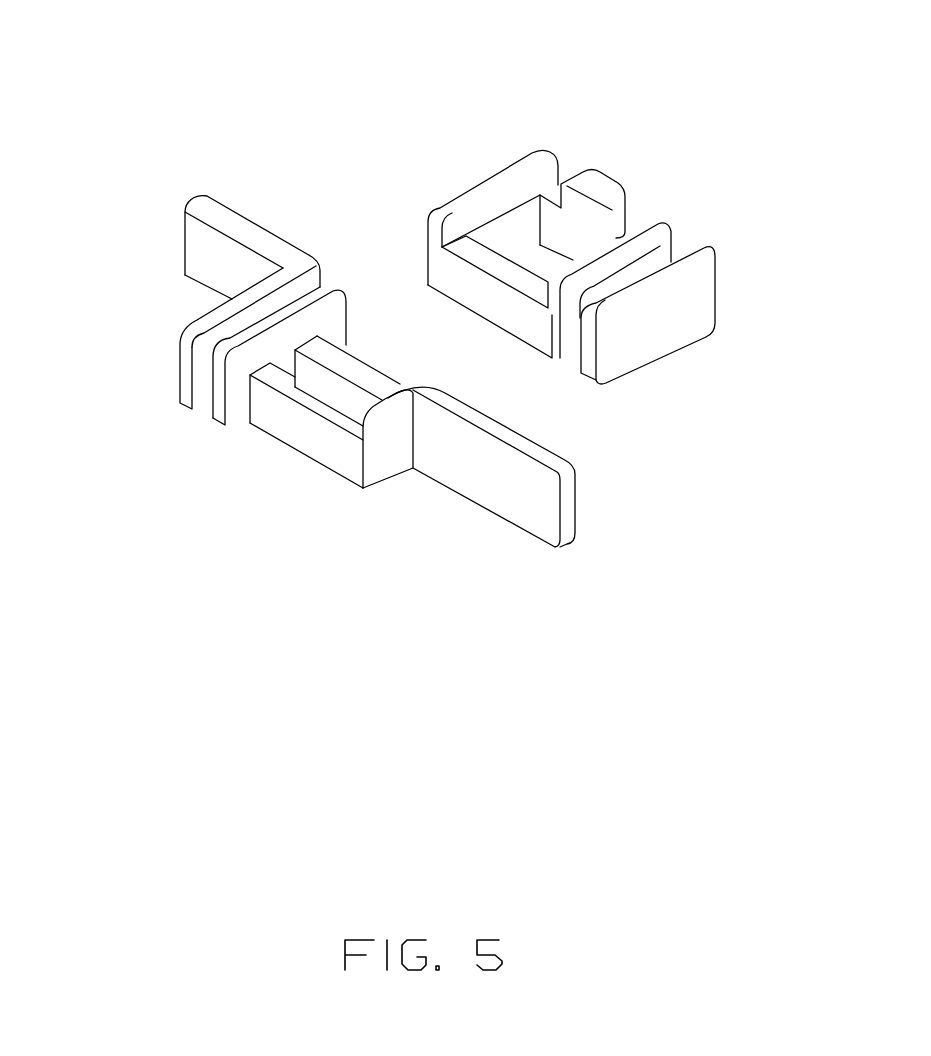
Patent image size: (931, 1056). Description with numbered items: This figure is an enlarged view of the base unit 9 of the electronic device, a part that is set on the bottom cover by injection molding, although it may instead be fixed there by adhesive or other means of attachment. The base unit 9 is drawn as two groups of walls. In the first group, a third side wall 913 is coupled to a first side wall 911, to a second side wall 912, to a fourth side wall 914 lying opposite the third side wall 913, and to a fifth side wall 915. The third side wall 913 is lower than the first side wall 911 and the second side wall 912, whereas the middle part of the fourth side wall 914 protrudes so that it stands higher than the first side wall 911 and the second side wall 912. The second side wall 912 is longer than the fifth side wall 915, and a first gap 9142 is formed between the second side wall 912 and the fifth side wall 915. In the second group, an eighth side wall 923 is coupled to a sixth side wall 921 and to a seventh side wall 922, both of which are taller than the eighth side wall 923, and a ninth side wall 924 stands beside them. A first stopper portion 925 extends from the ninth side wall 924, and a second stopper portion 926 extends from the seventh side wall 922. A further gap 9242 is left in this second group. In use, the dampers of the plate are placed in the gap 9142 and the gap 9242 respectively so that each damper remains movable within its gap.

The base unit 9 is at (296, 38).
The first side wall 911 is at (474, 254).
The second side wall 912 is at (656, 268).
The third side wall 913 is at (462, 283).
The fourth side wall 914 is at (622, 205).
The first gap 9142 is at (733, 233).
The fifth side wall 915 is at (683, 315).
The sixth side wall 921 is at (248, 382).
The seventh side wall 922 is at (328, 461).
The eighth side wall 923 is at (406, 381).
The ninth side wall 924 is at (196, 337).
The first gap 9242 is at (133, 414).
The first stopper portion 925 is at (205, 251).
The second stopper portion 926 is at (469, 478).